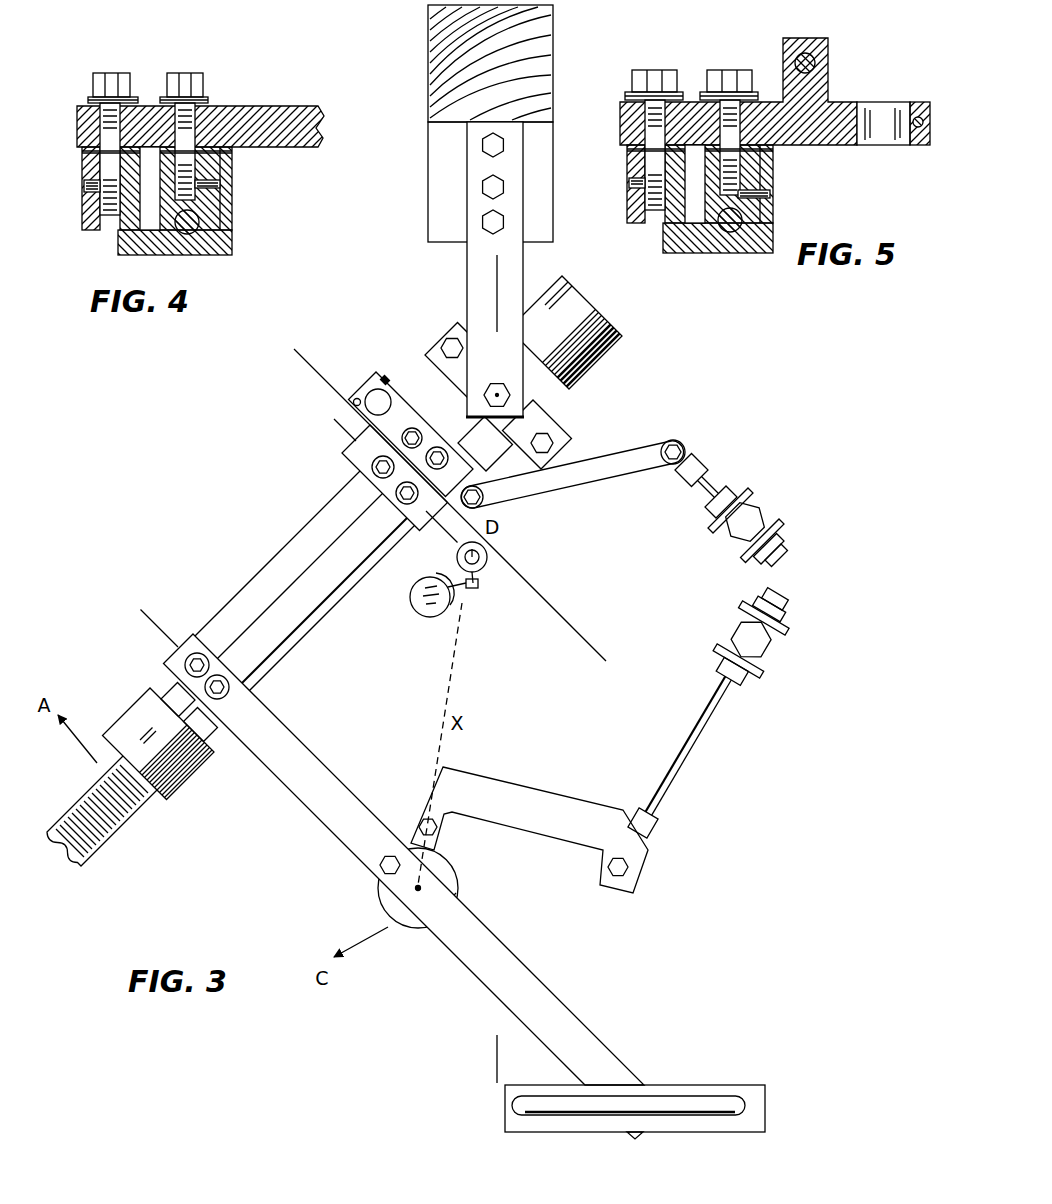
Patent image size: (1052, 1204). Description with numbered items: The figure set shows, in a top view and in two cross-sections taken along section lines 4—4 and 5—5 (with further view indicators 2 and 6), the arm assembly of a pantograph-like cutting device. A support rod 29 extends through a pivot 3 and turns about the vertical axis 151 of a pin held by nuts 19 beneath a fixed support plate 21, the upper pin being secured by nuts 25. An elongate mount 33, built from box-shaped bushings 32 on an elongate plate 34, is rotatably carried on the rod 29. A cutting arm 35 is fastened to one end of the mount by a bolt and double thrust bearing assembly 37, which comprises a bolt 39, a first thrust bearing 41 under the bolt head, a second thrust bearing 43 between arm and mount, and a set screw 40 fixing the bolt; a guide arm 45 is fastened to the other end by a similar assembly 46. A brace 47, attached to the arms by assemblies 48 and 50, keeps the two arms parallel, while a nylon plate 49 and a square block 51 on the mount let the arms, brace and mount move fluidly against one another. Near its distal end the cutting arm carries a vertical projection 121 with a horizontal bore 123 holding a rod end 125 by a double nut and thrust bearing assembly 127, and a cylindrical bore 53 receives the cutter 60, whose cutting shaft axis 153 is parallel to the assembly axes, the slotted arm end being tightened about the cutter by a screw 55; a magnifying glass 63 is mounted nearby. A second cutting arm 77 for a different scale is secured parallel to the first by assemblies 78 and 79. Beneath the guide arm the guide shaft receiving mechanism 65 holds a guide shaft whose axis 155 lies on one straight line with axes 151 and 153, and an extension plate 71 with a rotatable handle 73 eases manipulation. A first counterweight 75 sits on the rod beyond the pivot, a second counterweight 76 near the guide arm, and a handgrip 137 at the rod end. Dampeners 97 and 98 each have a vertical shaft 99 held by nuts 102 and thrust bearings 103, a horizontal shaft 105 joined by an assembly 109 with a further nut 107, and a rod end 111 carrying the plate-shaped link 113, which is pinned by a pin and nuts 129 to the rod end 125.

In FIG. 3, the section line 2- 2 is at (305, 348).
In FIG. 3, the pivot 3 is at (538, 399).
In FIG. 3, the section line 4— 4 is at (140, 621).
In FIG. 3, the section line 5— 5 is at (336, 428).
In FIG. 3, the view direction 6 is at (502, 262).
In FIG. 3, the nut 19 is at (569, 429).
In FIG. 3, the fixed support plate 21 is at (466, 283).
In FIG. 3, the nut 25 is at (493, 384).
In FIG. 3, the support rod 29 is at (495, 430).
In FIG. 4, the support rod 29 is at (196, 255).
In FIG. 5, the support rod 29 is at (750, 253).
In FIG. 4, the bushing 32 is at (187, 255).
In FIG. 5, the bushing 32 is at (720, 252).
In FIG. 3, the mount 33 is at (282, 631).
In FIG. 4, the mount 33 is at (215, 195).
In FIG. 5, the mount 33 is at (665, 230).
In FIG. 3, the plate 34 is at (346, 573).
In FIG. 4, the plate 34 is at (212, 190).
In FIG. 5, the plate 34 is at (765, 187).
In FIG. 3, the cutting arm 35 is at (344, 459).
In FIG. 5, the cutting arm 35 is at (840, 103).
In FIG. 3, the bolt and double thrust bearing assembly 37 is at (402, 504).
In FIG. 5, the bolt and double thrust bearing assembly 37 is at (730, 68).
In FIG. 4, the bolt 39 is at (113, 72).
In FIG. 5, the bolt 39 is at (712, 70).
In FIG. 4, the set screw 40 is at (86, 187).
In FIG. 5, the set screw 40 is at (630, 182).
In FIG. 4, the first thrust bearing 41 is at (90, 98).
In FIG. 5, the first thrust bearing 41 is at (627, 98).
In FIG. 4, the second thrust bearing 43 is at (82, 155).
In FIG. 5, the second thrust bearing 43 is at (627, 150).
In FIG. 3, the guide arm 45 is at (319, 767).
In FIG. 4, the guide arm 45 is at (282, 107).
In FIG. 3, the bolt and double thrust bearing assembly 46 is at (232, 686).
In FIG. 4, the bolt and double thrust bearing assembly 46 is at (206, 70).
In FIG. 3, the brace 47 is at (263, 554).
In FIG. 4, the brace 47 is at (82, 215).
In FIG. 5, the brace 47 is at (627, 203).
In FIG. 3, the bolt and double thrust bearing assembly 48 is at (372, 472).
In FIG. 5, the bolt and double thrust bearing assembly 48 is at (652, 68).
In FIG. 3, the nylon plate 49 is at (299, 665).
In FIG. 4, the nylon plate 49 is at (232, 226).
In FIG. 5, the nylon plate 49 is at (773, 210).
In FIG. 3, the bolt and double thrust bearing assembly 50 is at (200, 650).
In FIG. 4, the bolt and double thrust bearing assembly 50 is at (125, 70).
In FIG. 4, the square block 51 is at (118, 248).
In FIG. 5, the square block 51 is at (663, 250).
In FIG. 5, the cylindrical bore 53 is at (890, 110).
In FIG. 3, the set screw 55 is at (470, 587).
In FIG. 5, the set screw 55 is at (920, 132).
In FIG. 3, the cutter 60 is at (478, 585).
In FIG. 3, the magnifying glass 63 is at (440, 617).
In FIG. 3, the guide shaft receiving mechanism 65 is at (476, 830).
In FIG. 3, the extension plate 71 is at (528, 973).
In FIG. 3, the handle 73 is at (722, 1085).
In FIG. 3, the first counterweight 75 is at (604, 347).
In FIG. 3, the second counterweight 76 is at (190, 775).
In FIG. 3, the second cutting arm 77 is at (399, 397).
In FIG. 3, the bolt and double thrust bearing assembly 78 is at (421, 432).
In FIG. 3, the bolt and double thrust bearing assembly 79 is at (449, 458).
In FIG. 3, the dampener 97 is at (770, 517).
In FIG. 3, the dampener 98 is at (697, 748).
In FIG. 3, the vertical shaft 99 is at (735, 548).
In FIG. 3, the nut 102 is at (718, 512).
In FIG. 3, the thrust bearing 103 is at (735, 507).
In FIG. 3, the horizontal shaft 105 is at (722, 490).
In FIG. 3, the nut 107 is at (760, 660).
In FIG. 3, the double nut and thrust bearing assembly 109 is at (782, 550).
In FIG. 3, the rod end 111 is at (698, 470).
In FIG. 3, the link 113 is at (613, 462).
In FIG. 5, the vertical projection 121 is at (828, 42).
In FIG. 5, the horizontal bore 123 is at (815, 63).
In FIG. 3, the rod end 125 is at (482, 504).
In FIG. 3, the double nut and thrust bearing assembly 127 is at (412, 581).
In FIG. 3, the pin and pair of nuts 129 is at (687, 449).
In FIG. 3, the handgrip 137 is at (195, 849).
In FIG. 3, the vertical axis 151 is at (503, 382).
In FIG. 3, the axis of cutting shaft 153 is at (488, 557).
In FIG. 3, the axis of guide shaft 155 is at (458, 902).